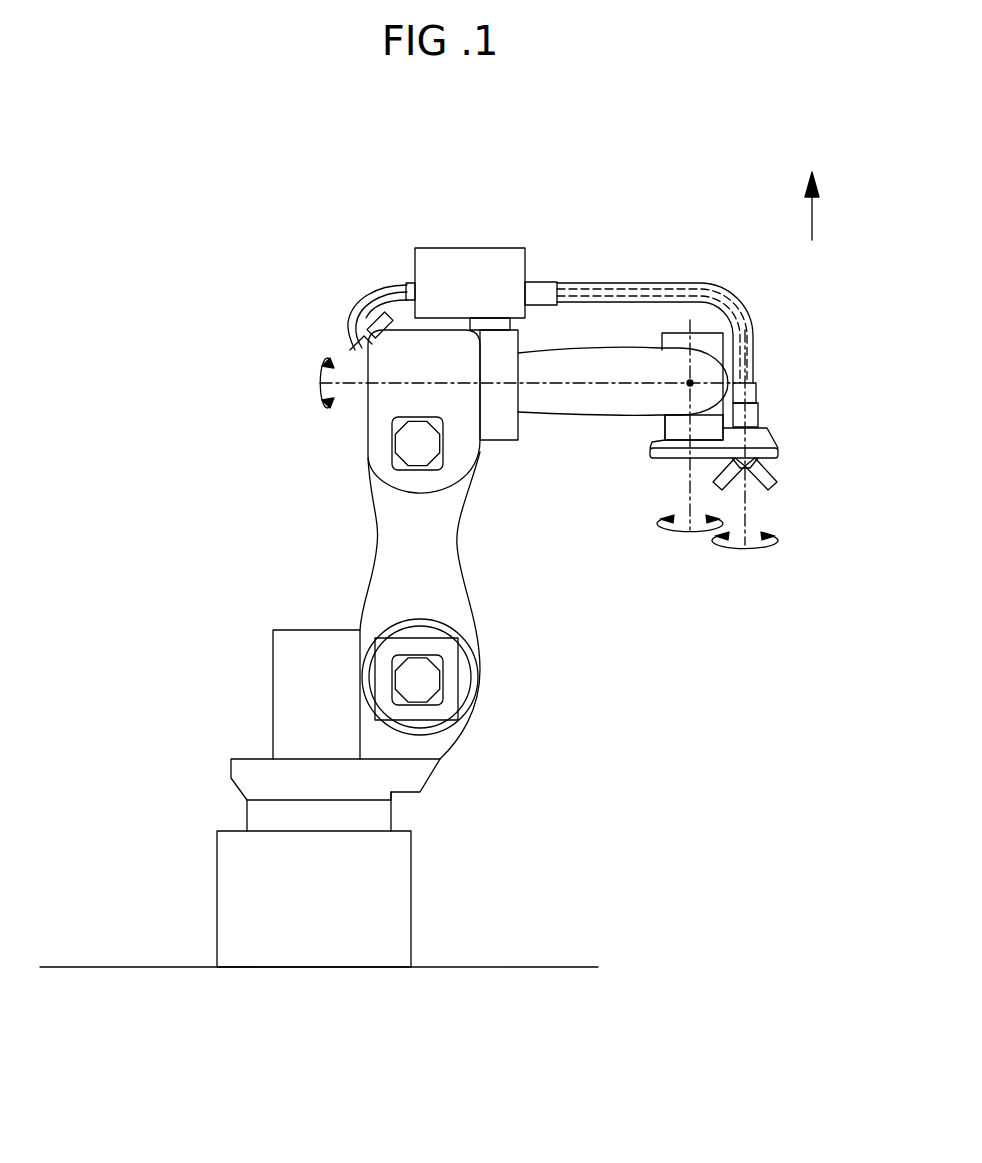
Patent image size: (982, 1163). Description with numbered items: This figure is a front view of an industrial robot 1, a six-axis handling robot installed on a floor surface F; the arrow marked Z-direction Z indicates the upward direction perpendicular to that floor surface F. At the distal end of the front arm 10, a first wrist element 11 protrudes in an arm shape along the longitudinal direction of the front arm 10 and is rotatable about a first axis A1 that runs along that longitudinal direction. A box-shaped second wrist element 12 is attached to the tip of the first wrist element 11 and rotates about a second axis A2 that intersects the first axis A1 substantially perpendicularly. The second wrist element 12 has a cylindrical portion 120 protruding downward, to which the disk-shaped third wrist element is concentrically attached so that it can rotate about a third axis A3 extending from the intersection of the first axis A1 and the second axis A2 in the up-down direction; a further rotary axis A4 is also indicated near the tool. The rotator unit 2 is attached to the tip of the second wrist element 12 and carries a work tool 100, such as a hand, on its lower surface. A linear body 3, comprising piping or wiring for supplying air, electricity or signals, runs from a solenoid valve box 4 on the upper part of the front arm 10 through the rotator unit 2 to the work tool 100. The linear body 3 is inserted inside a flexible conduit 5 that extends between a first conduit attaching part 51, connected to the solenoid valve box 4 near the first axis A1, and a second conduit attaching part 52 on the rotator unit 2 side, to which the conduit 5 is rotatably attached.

The robot 1 is at (535, 526).
The rotator unit 2 is at (806, 425).
The linear body 3 is at (716, 288).
The solenoid valve box 4 is at (450, 250).
The conduit 5 is at (583, 283).
The front arm 10 is at (502, 436).
The first wrist element 11 is at (543, 410).
The second wrist element 12 is at (660, 348).
The first conduit attaching part 51 is at (535, 283).
The second conduit attaching part 52 is at (755, 413).
The work tool 100 is at (766, 468).
The cylindrical portion 120 is at (667, 426).
The first axis A1 is at (347, 386).
The second axis A2 is at (692, 381).
The third axis A3 is at (680, 494).
The rotation axis A4 is at (750, 507).
The Z-direction Z is at (811, 225).
The floor surface F is at (62, 962).